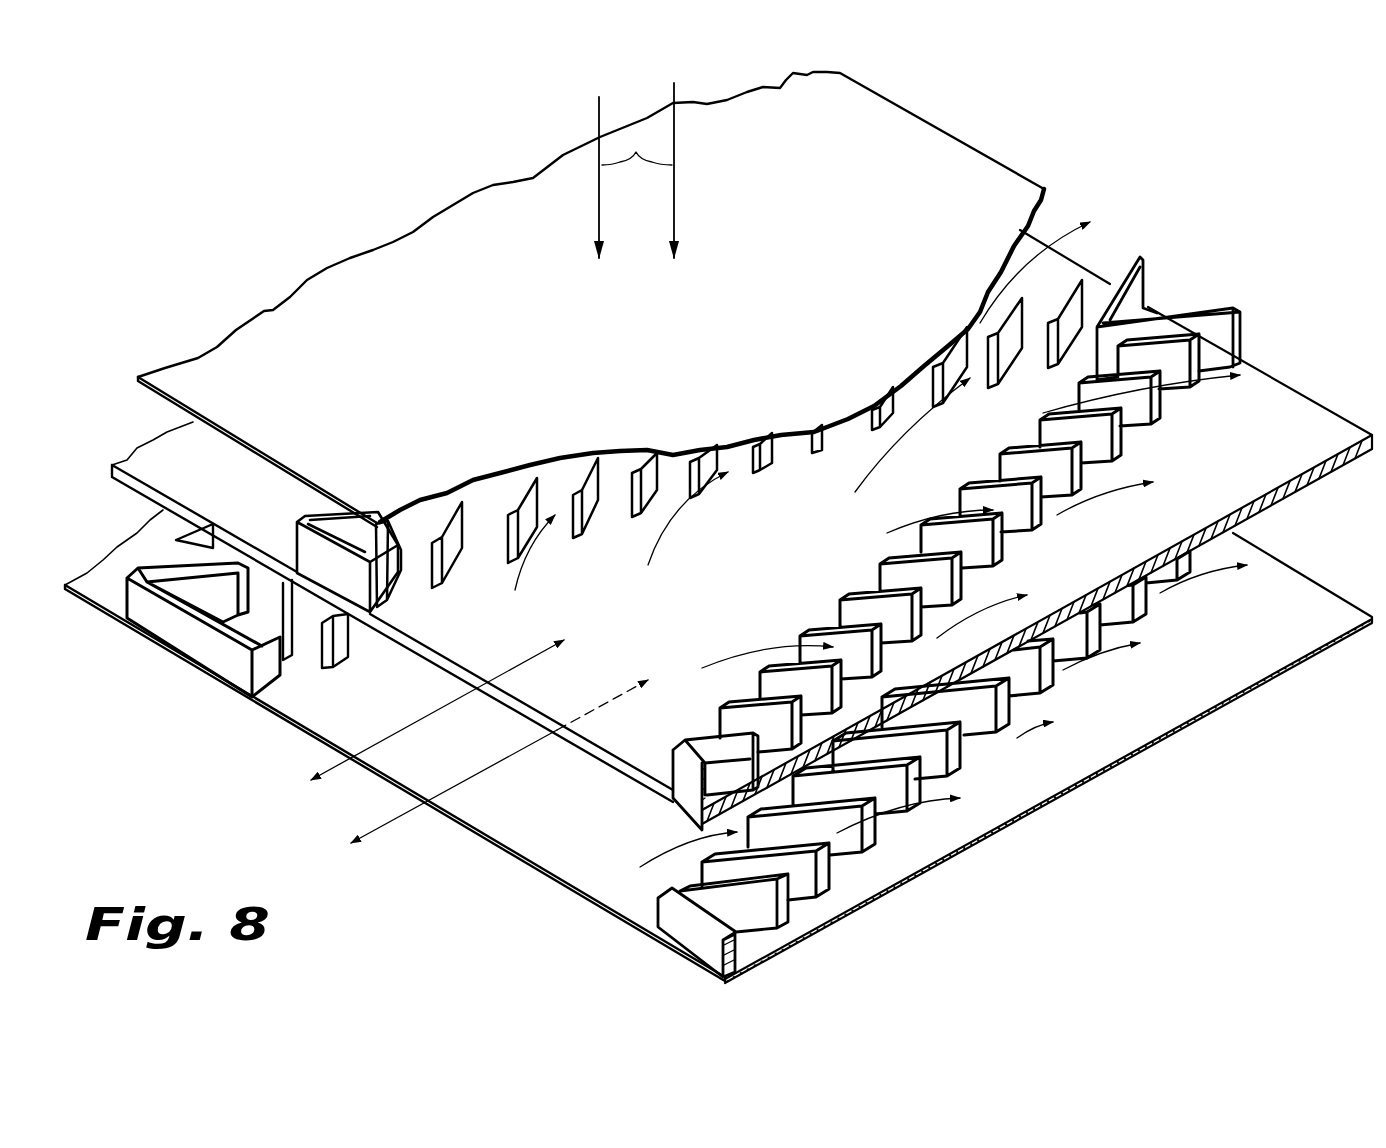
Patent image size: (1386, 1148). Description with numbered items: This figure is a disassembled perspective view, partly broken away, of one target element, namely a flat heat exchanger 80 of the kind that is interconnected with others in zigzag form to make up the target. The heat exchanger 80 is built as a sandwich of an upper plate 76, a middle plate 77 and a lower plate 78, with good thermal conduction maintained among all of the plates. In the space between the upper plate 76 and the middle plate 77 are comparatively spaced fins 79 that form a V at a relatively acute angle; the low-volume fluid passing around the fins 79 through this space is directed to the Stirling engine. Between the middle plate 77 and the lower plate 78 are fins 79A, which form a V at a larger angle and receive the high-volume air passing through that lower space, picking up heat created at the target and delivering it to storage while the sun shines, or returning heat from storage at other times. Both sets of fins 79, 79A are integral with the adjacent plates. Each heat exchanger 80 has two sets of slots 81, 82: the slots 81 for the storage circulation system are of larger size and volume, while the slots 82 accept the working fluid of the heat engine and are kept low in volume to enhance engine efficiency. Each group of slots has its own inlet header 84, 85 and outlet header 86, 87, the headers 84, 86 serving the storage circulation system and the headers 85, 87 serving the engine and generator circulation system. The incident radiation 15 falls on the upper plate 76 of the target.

The incident solar radiation 15 is at (636, 170).
The upper plate 76 is at (215, 348).
The middle plate 77 is at (112, 468).
The lower plate 78 is at (65, 585).
The fins 79 is at (878, 577).
The fins 79A is at (942, 767).
The heat exchanger 80 is at (125, 708).
The slots 81 is at (316, 706).
The slots 82 is at (453, 640).
The inlet header 84 is at (108, 514).
The inlet header 85 is at (162, 424).
The outlet header 86 is at (1346, 524).
The outlet header 87 is at (1382, 309).